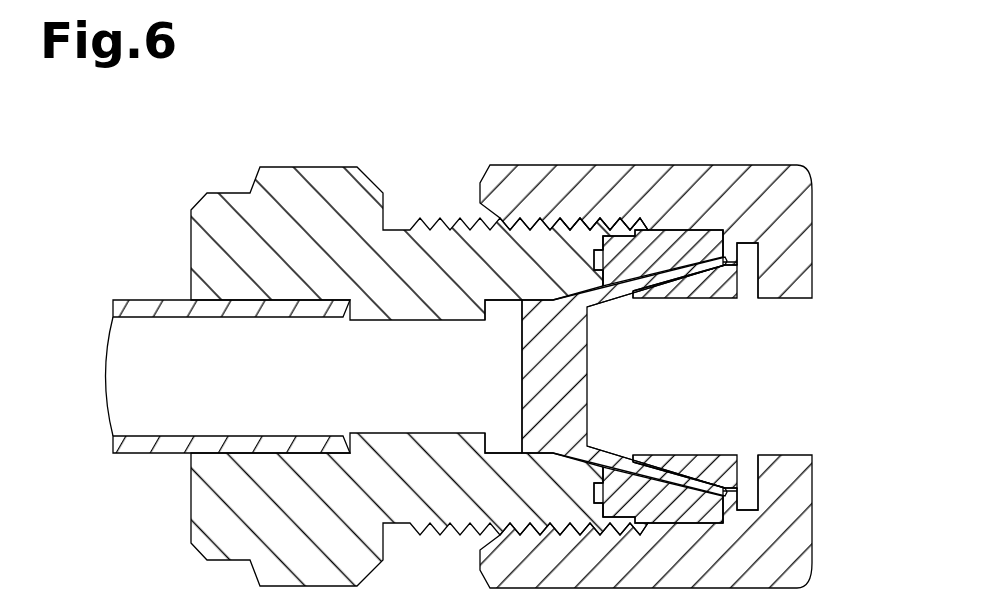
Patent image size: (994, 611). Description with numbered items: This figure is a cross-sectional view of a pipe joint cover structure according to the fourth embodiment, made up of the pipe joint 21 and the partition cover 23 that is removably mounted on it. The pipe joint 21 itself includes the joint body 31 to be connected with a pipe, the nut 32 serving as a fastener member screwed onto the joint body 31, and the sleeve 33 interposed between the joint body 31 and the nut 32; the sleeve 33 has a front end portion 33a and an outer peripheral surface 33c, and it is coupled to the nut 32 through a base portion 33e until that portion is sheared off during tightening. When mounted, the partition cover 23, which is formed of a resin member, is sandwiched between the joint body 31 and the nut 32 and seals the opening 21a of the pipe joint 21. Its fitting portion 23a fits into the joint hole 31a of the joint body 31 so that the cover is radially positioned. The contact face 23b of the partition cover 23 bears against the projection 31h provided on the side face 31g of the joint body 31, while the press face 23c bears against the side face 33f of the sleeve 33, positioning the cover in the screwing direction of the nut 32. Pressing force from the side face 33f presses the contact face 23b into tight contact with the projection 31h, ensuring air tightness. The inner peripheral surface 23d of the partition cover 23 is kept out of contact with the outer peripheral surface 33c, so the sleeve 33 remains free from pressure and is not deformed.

The pipe joint 21 is at (130, 151).
The opening 21a is at (435, 379).
The partition cover 23 is at (588, 407).
The fitting portion 23a is at (522, 367).
The contact face 23b is at (597, 272).
The press face 23c is at (737, 230).
The inner peripheral surface 23d is at (614, 297).
The joint body 31 is at (233, 192).
The joint hole 31a is at (500, 301).
The side face 31g is at (615, 213).
The projection 31h is at (606, 252).
The nut 32 is at (566, 165).
The sleeve 33 is at (713, 292).
The front end portion 33a is at (633, 300).
The outer peripheral surface 33c is at (670, 282).
The base portion 33e is at (735, 262).
The side face 33f is at (745, 228).